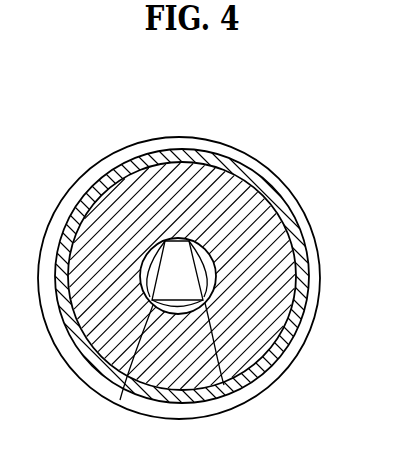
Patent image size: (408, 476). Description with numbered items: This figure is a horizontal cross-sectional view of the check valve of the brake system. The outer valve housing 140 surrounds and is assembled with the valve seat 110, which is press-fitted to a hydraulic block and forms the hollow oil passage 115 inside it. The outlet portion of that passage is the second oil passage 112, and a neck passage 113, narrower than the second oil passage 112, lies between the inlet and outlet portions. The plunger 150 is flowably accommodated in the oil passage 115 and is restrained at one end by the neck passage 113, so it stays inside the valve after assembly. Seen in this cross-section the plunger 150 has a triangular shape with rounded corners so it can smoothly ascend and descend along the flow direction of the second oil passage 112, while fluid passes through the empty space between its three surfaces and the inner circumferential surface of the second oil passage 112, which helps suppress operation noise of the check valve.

The valve seat 110 is at (145, 185).
The second oil passage 112 is at (151, 370).
The neck passage 113 is at (224, 385).
The oil passage 115 is at (120, 400).
The valve housing 140 is at (183, 152).
The plunger 150 is at (196, 268).